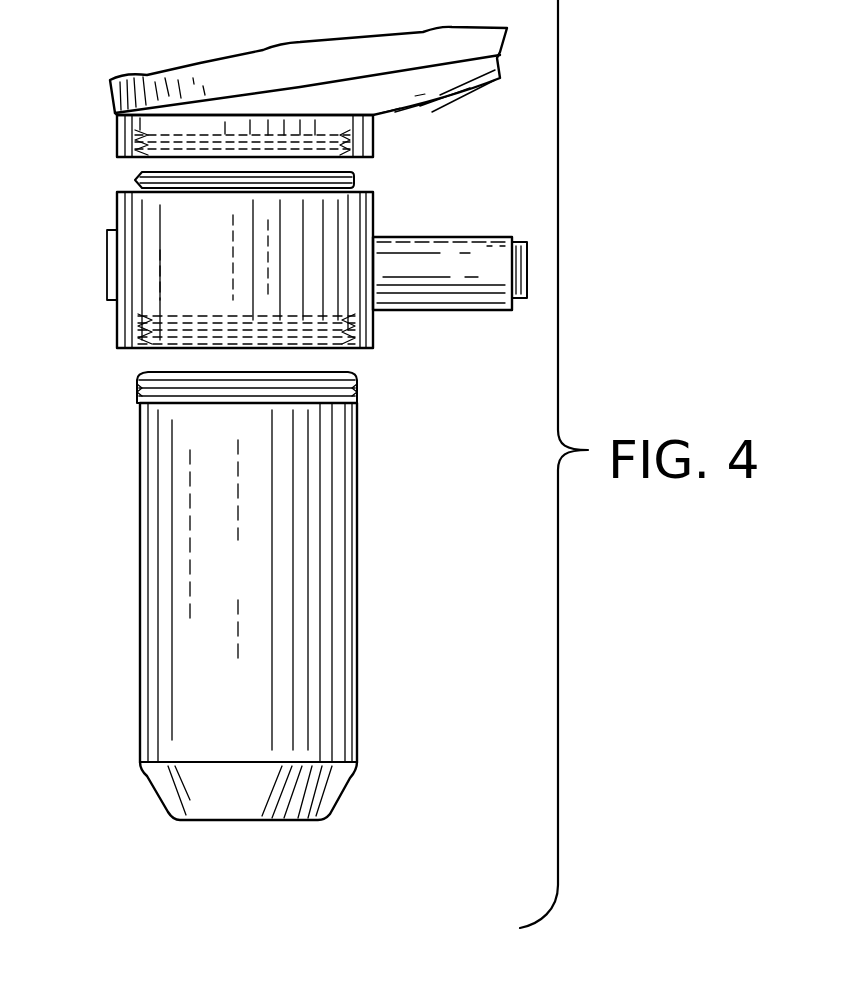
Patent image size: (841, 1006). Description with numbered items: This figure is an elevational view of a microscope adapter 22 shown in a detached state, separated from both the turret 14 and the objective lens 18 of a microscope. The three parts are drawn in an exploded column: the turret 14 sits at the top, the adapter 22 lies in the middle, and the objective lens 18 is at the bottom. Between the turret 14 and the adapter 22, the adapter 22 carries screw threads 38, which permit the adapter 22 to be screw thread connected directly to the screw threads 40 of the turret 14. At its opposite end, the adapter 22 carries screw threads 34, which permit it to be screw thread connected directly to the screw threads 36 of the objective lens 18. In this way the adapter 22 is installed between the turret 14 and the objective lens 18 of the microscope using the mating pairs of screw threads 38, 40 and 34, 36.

The turret 14 is at (377, 133).
The screw threads 40 is at (376, 148).
The screw threads 38 is at (354, 180).
The adapter 22 is at (355, 230).
The screw threads 34 is at (116, 350).
The screw threads 36 is at (358, 393).
The objective lens 18 is at (348, 597).